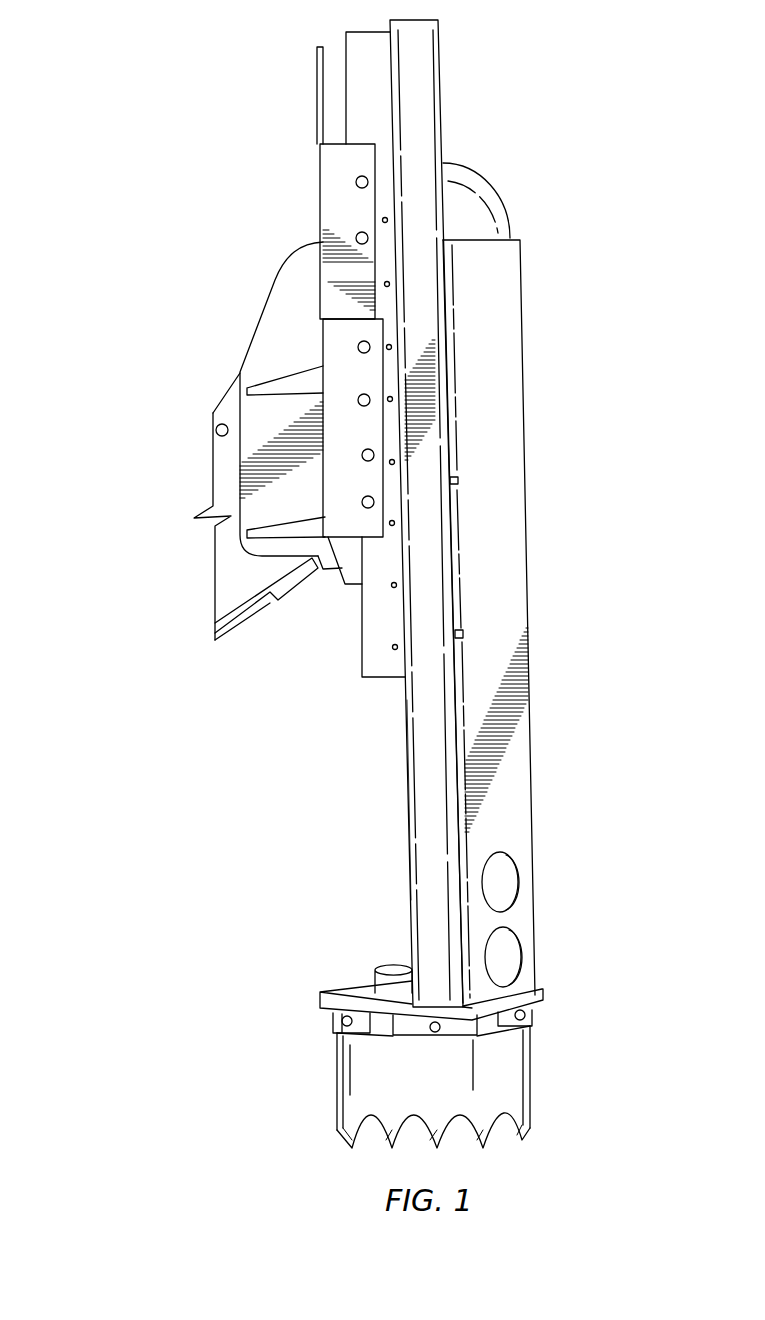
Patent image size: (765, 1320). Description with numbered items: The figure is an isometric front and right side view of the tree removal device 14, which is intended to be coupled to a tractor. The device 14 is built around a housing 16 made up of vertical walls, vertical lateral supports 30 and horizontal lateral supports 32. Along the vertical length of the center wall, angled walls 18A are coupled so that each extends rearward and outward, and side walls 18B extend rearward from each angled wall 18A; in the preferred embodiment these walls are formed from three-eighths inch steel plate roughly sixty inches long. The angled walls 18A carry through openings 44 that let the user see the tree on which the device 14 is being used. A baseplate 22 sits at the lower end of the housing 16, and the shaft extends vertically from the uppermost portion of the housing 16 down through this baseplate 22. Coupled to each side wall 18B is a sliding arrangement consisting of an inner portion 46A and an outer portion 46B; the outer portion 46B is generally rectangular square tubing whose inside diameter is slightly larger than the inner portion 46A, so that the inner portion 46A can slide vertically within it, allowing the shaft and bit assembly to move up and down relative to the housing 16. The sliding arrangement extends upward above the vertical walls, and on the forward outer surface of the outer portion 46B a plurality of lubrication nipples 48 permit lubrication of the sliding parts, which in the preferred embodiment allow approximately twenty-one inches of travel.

The device 14 is at (152, 236).
The housing 16 is at (550, 594).
The angled walls 18A is at (508, 367).
The side walls 18B is at (397, 793).
The baseplate 22 is at (342, 993).
The vertical lateral supports 30 is at (288, 303).
The horizontal lateral supports 32 is at (295, 527).
The through openings 44 is at (503, 873).
The inner portion 46A is at (380, 660).
The outer portion 46B is at (430, 819).
The lubrication nipples 48 is at (458, 480).